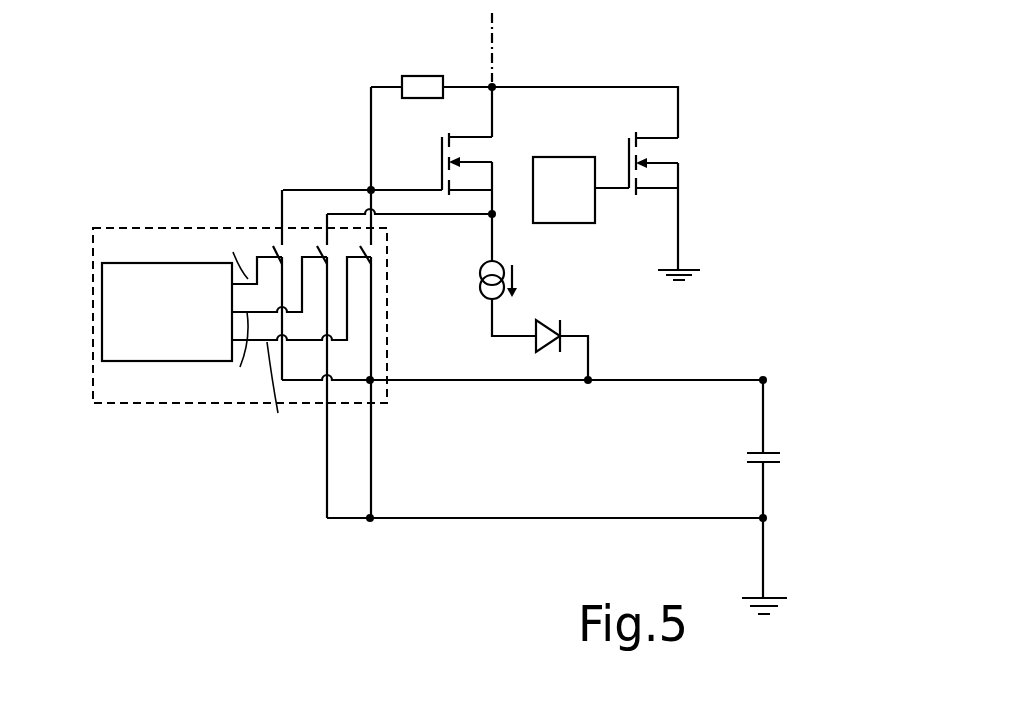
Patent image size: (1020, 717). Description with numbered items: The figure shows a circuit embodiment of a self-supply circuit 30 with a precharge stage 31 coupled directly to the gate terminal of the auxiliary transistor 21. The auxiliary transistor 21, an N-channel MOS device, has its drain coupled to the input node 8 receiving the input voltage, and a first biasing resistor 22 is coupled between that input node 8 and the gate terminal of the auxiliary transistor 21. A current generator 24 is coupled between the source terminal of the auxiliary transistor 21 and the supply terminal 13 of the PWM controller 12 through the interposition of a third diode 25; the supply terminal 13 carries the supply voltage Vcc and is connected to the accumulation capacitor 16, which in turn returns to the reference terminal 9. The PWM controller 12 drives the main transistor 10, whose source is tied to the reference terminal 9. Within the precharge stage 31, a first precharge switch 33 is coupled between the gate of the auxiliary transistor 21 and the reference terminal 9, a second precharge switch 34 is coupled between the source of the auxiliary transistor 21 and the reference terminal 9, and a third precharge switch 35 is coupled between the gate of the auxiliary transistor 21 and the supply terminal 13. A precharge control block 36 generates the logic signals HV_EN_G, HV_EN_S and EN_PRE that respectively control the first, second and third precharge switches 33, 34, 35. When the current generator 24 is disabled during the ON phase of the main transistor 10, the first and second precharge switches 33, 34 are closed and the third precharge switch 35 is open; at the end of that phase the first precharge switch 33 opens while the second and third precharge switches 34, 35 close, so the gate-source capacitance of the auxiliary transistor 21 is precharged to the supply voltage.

The input node 8 is at (493, 86).
The reference terminal 9 is at (685, 283).
The main transistor 10 is at (659, 163).
The PWM controller 12 is at (573, 222).
The supply terminal 13 is at (764, 379).
The accumulation capacitor 16 is at (770, 453).
The auxiliary transistor 21 is at (484, 162).
The first biasing resistor 22 is at (412, 98).
The current generator 24 is at (505, 262).
The third diode 25 is at (545, 326).
The self-supply circuit 30 is at (108, 163).
The precharge stage 31 is at (172, 412).
The first precharge switch 33 is at (360, 247).
The second precharge switch 34 is at (317, 247).
The third precharge switch 35 is at (274, 247).
The precharge control block 36 is at (165, 273).